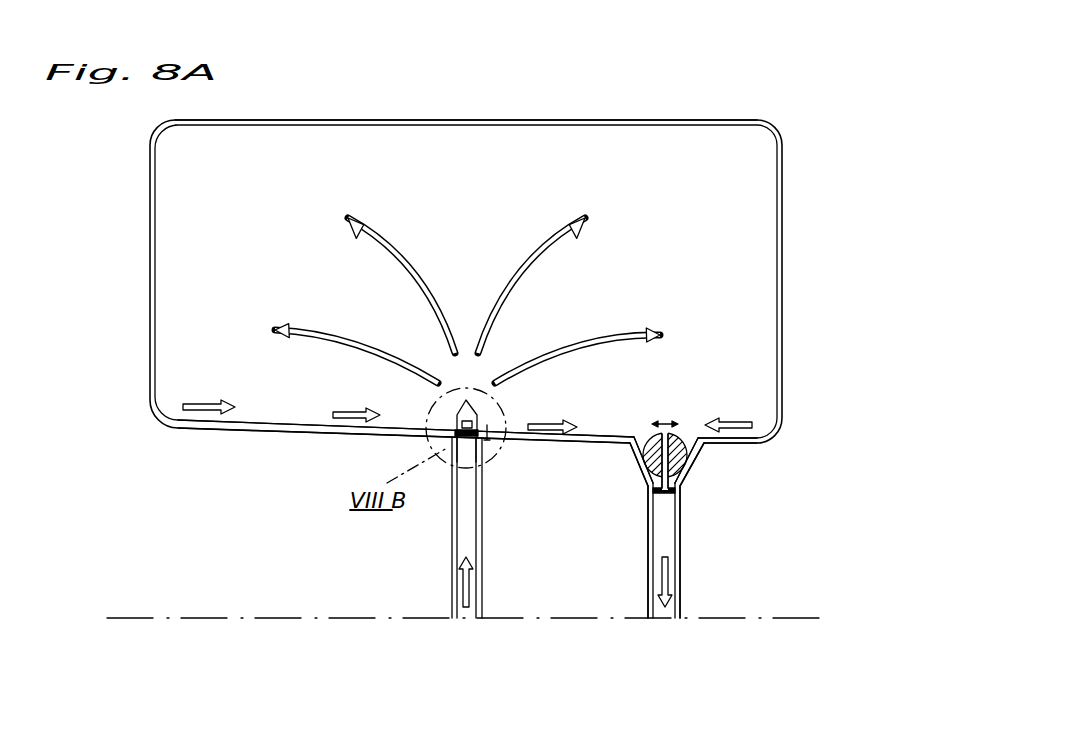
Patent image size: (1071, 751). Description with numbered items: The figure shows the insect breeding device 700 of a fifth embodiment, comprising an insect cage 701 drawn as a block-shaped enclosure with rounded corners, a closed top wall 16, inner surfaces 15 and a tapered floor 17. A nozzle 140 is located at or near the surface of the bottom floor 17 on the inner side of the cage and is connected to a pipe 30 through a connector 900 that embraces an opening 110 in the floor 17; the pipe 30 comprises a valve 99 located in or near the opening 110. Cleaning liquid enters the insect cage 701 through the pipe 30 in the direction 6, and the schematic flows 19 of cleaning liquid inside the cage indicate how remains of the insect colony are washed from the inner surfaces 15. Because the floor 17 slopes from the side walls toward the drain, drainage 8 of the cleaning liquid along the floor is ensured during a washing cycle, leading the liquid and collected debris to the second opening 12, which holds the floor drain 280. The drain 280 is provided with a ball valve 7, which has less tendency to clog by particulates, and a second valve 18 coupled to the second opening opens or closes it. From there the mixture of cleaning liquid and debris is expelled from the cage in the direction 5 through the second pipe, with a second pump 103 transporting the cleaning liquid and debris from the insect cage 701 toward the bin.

The insect breeding device 700 is at (48, 533).
The insect cage 701 is at (709, 58).
The inner surfaces 15 is at (777, 280).
The closed top wall 16 is at (401, 124).
The floor 17 is at (260, 426).
The ball valve 7 is at (698, 440).
The second opening 12 is at (707, 456).
The direction of expelled liquid 5 is at (672, 600).
The pipe 30 is at (479, 540).
The direction of entering cleaning liquid 6 is at (467, 590).
The flows of cleaning liquid 19 is at (276, 326).
The drainage 8 is at (237, 404).
The nozzle 140 is at (455, 427).
The connector 900 is at (479, 427).
The opening 110 is at (455, 434).
The valve 99 is at (466, 442).
The drain 280 is at (679, 490).
The second valve 18 is at (664, 420).
The second pump 103 is at (663, 465).